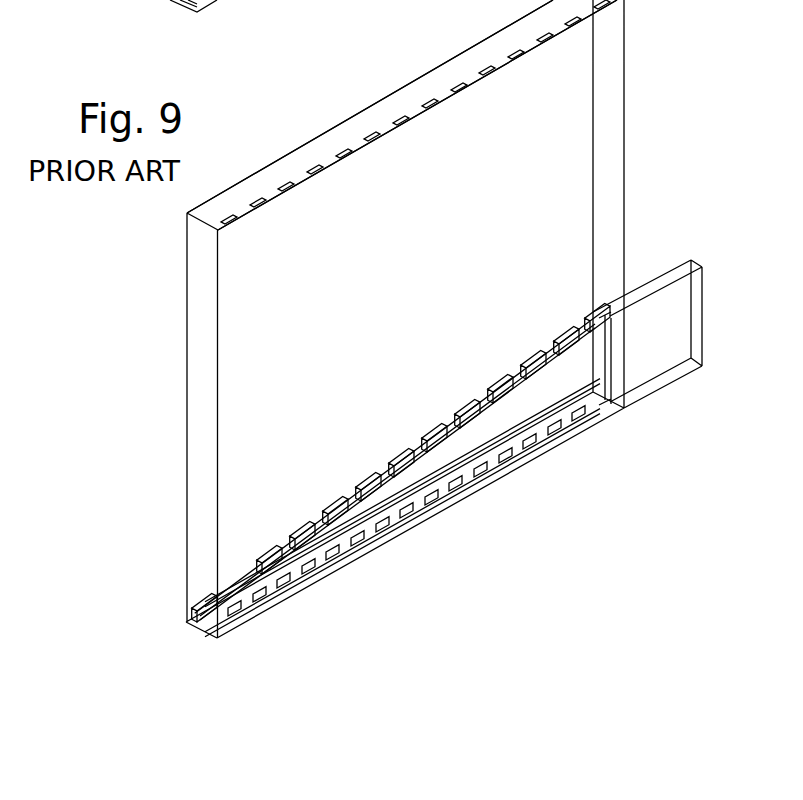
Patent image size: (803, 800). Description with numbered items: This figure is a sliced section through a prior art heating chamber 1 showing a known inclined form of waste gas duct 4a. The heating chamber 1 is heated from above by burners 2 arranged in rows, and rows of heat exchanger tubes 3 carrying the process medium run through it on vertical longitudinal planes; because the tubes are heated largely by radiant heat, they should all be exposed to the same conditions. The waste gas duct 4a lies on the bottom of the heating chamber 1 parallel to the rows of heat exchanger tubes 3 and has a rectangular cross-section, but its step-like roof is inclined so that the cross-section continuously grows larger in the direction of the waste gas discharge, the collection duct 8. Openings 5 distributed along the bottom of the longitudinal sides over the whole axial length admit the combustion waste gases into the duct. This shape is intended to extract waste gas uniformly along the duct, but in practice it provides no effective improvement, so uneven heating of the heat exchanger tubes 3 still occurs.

The heating chamber 1 is at (203, 330).
The burners 2 is at (531, 53).
The heat exchanger tubes 3 is at (346, 120).
The waste gas duct 4a is at (462, 452).
The openings 5 is at (575, 422).
The collection duct 8 is at (678, 323).